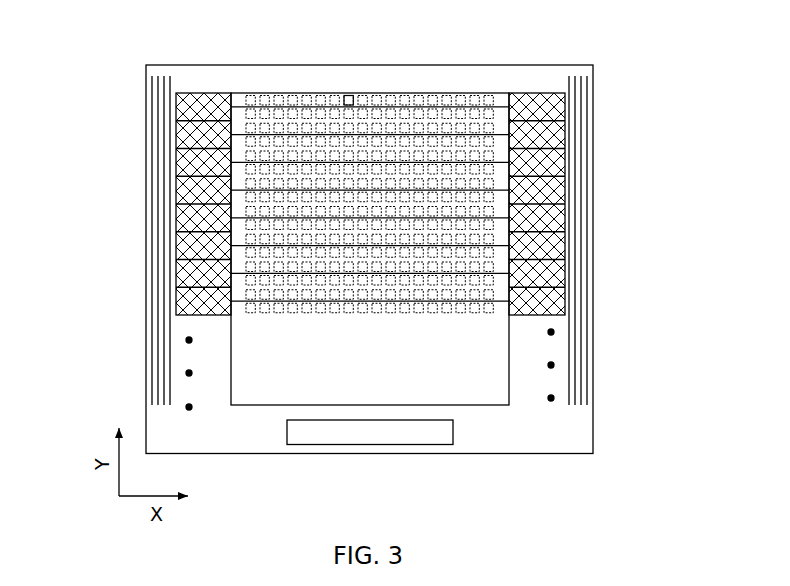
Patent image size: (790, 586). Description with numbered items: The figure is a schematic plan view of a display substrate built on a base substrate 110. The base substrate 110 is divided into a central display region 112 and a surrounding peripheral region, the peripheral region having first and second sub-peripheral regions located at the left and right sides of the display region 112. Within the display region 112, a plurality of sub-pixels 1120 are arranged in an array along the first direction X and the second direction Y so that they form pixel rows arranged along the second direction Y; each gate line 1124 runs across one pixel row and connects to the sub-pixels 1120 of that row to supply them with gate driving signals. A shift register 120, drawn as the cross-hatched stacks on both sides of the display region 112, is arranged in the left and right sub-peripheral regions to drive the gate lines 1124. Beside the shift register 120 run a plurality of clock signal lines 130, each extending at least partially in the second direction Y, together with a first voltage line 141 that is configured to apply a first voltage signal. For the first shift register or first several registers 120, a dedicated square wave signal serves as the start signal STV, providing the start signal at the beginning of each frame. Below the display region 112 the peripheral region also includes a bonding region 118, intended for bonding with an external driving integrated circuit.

The base substrate 110 is at (482, 73).
The display region 112 is at (456, 371).
The sub-pixels 1120 is at (252, 94).
The gate lines 1124 is at (350, 103).
The shift register 120 is at (195, 158).
The clock signal line 130 is at (583, 262).
The first voltage line 141 is at (168, 222).
The bonding region 118 is at (343, 433).
The start signal STV is at (152, 107).